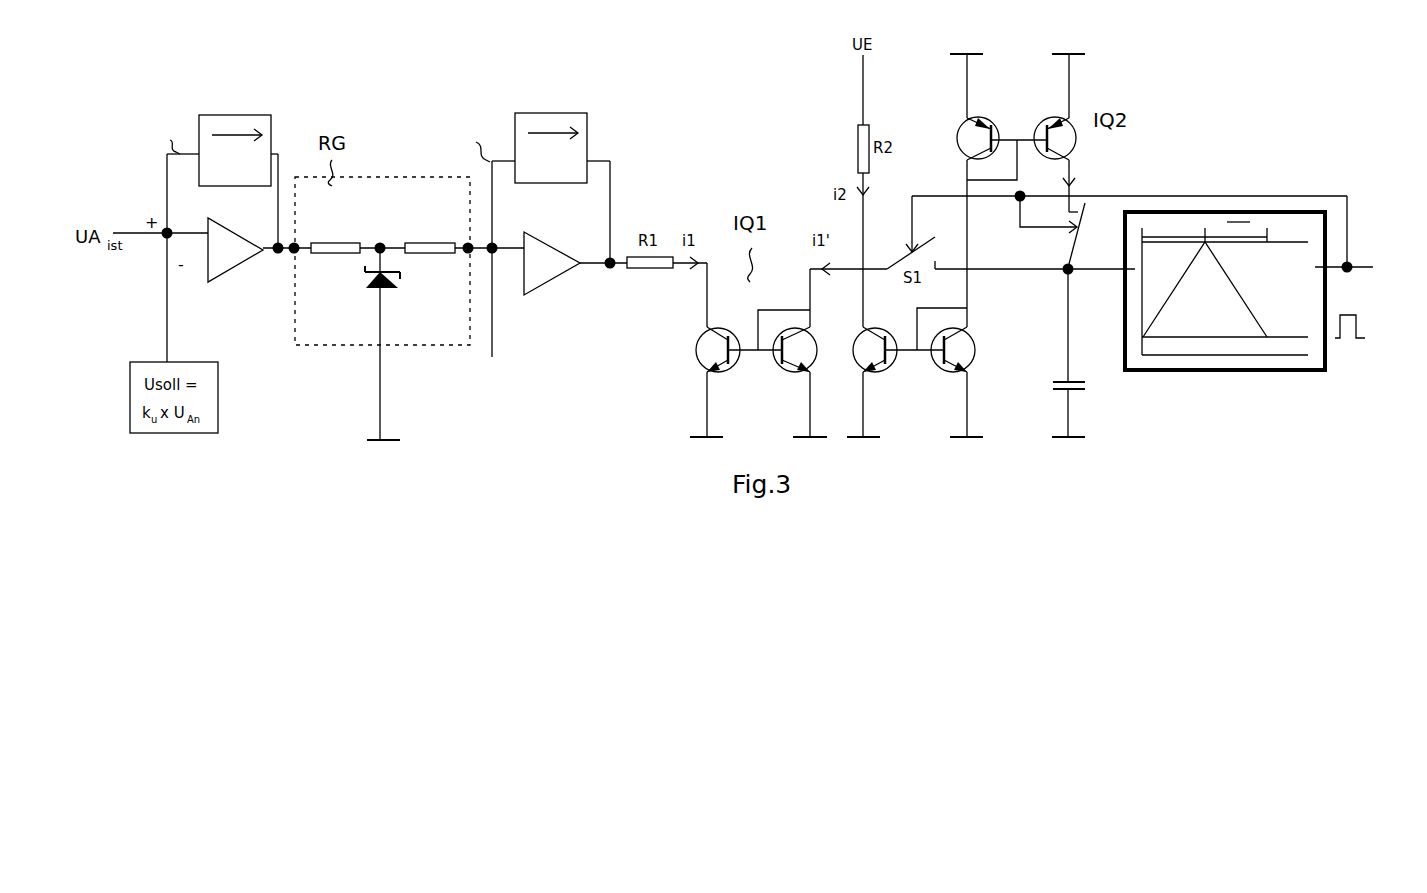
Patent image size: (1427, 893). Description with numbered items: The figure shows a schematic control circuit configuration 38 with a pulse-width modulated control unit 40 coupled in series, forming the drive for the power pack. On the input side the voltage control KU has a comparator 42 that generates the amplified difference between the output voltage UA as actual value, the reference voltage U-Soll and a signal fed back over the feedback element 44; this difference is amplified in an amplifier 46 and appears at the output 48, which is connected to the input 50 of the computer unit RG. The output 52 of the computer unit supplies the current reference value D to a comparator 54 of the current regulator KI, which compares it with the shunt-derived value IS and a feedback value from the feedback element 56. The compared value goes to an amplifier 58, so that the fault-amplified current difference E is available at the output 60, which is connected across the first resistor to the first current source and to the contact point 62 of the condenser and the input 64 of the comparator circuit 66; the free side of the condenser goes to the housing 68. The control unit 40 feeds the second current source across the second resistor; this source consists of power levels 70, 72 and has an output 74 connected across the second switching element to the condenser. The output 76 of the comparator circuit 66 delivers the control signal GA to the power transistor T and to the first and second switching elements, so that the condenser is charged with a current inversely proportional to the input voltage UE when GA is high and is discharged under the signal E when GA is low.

The control circuit configuration 38 is at (373, 84).
The control unit 40 is at (1196, 94).
The comparator 42 is at (160, 245).
The feedback element 44 is at (252, 116).
The amplifier 46 is at (230, 262).
The output 48 is at (280, 258).
The input 50 is at (300, 258).
The output 52 is at (462, 262).
The comparator 54 is at (500, 260).
The feedback element 56 is at (530, 115).
The amplifier 58 is at (564, 278).
The output 60 is at (614, 276).
The contact point 62 is at (1078, 280).
The input 64 is at (1116, 262).
The comparator circuit 66 is at (1229, 375).
The housing 68 is at (1072, 434).
The power level 70 is at (913, 380).
The power level 72 is at (1008, 118).
The output 74 is at (1078, 168).
The output 76 is at (1355, 275).